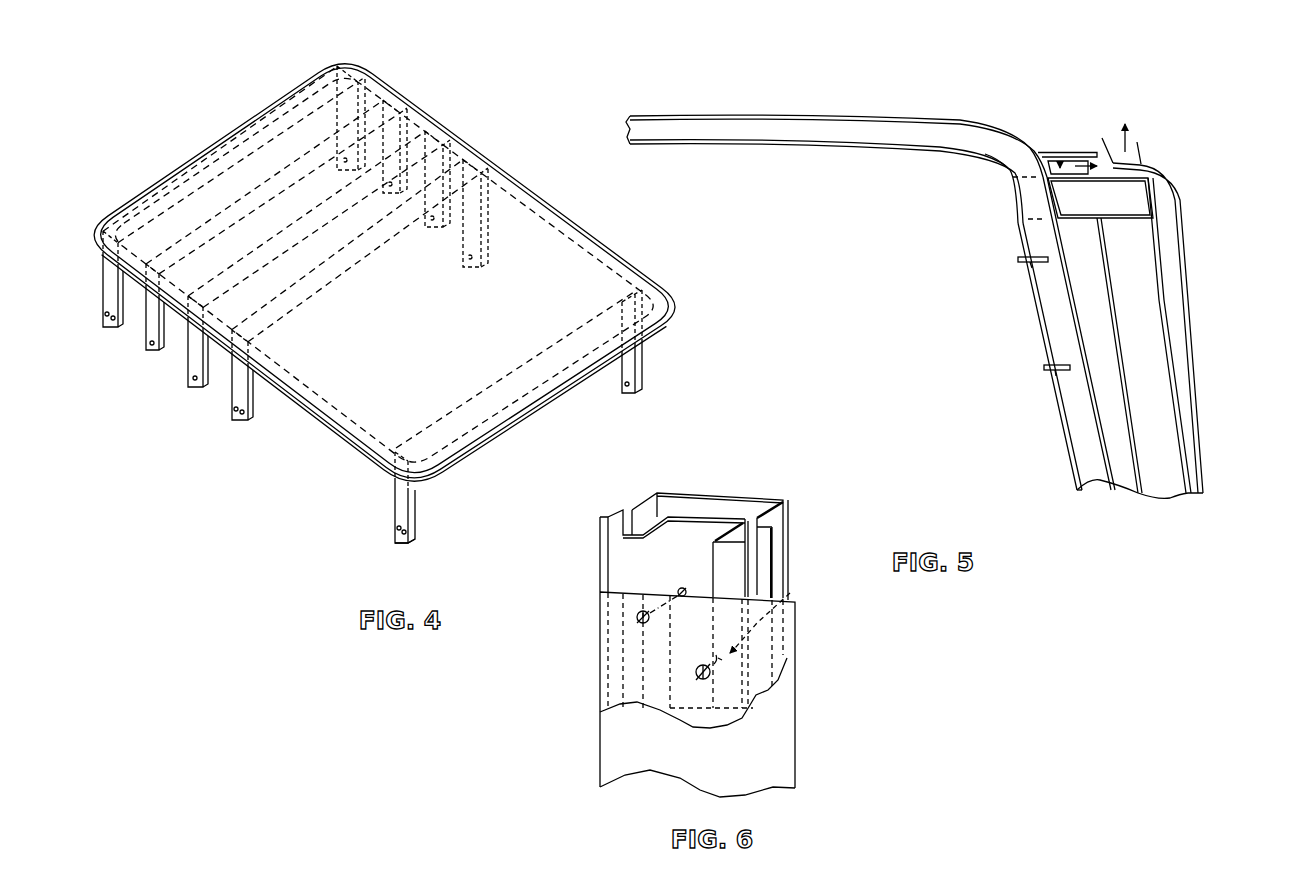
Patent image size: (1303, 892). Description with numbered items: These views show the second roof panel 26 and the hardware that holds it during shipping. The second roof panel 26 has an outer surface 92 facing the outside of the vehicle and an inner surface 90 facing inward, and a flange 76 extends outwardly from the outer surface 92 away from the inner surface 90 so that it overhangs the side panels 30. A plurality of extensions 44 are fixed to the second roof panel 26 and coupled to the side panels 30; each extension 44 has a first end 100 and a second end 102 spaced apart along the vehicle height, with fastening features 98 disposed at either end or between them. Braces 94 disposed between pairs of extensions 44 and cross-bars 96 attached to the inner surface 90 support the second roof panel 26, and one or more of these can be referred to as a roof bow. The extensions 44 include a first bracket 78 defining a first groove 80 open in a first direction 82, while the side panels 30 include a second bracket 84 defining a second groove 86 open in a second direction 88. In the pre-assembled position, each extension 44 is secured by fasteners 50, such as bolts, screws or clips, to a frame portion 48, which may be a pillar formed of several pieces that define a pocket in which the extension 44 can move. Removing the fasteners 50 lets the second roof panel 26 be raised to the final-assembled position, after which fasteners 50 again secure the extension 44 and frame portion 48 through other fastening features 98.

In FIG. 4, the second roof panel 26 is at (498, 213).
In FIG. 5, the second roof panel 26 is at (688, 125).
In FIG. 5, the side panel 30 is at (1197, 393).
In FIG. 4, the extension 44 is at (108, 328).
In FIG. 5, the extension 44 is at (1040, 300).
In FIG. 6, the extension 44 is at (690, 512).
In FIG. 5, the frame portion 48 is at (1062, 432).
In FIG. 6, the frame portion 48 is at (790, 524).
In FIG. 5, the fastener 50 is at (1022, 262).
In FIG. 6, the fastener 50 is at (640, 625).
In FIG. 4, the flange 76 is at (288, 98).
In FIG. 5, the flange 76 is at (1073, 153).
In FIG. 5, the first bracket 78 is at (1043, 174).
In FIG. 5, the first groove 80 is at (1058, 160).
In FIG. 5, the first direction 82 is at (1085, 172).
In FIG. 5, the second bracket 84 is at (1147, 150).
In FIG. 5, the second groove 86 is at (1133, 143).
In FIG. 5, the second direction 88 is at (1120, 135).
In FIG. 5, the inner surface 90 is at (828, 150).
In FIG. 5, the outer surface 92 is at (828, 117).
In FIG. 4, the brace 94 is at (236, 130).
In FIG. 4, the cross-bar 96 is at (293, 186).
In FIG. 5, the fastening feature 98 is at (1012, 254).
In FIG. 6, the fastening feature 98 is at (684, 586).
In FIG. 4, the first end 100 is at (413, 542).
In FIG. 5, the first end 100 is at (1074, 485).
In FIG. 4, the second end 102 is at (442, 486).
In FIG. 5, the second end 102 is at (982, 158).